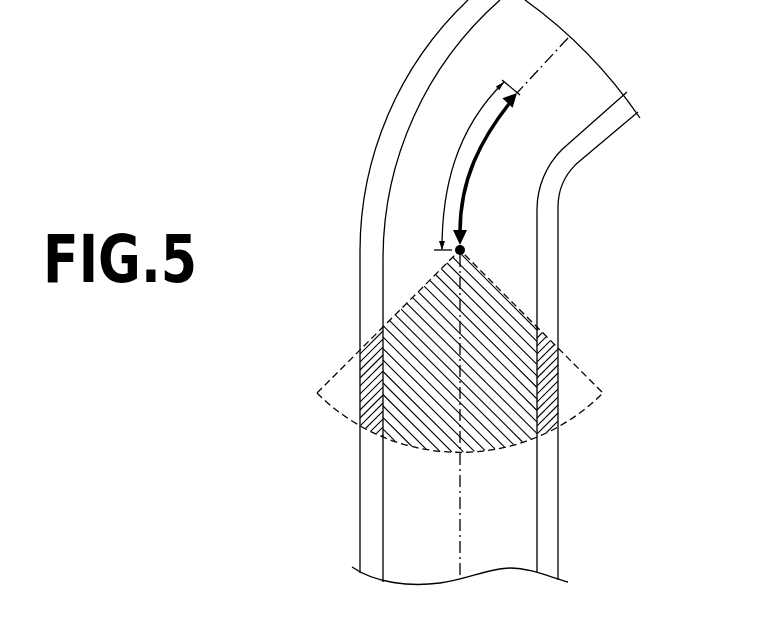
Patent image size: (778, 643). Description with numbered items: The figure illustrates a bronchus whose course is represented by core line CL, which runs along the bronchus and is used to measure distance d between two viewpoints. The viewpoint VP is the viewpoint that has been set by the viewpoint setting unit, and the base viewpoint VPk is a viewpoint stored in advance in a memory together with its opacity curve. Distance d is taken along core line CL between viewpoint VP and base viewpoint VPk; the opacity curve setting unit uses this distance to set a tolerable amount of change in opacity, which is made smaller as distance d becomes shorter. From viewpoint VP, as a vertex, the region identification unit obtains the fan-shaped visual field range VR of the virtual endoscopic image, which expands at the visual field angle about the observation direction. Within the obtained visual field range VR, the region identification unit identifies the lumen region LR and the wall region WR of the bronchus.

The core line CL is at (548, 58).
The base viewpoint VPk is at (533, 97).
The viewpoint VP is at (477, 240).
The distance d is at (475, 166).
The visual field range VR is at (335, 372).
The lumen region LR is at (516, 314).
The wall region WR is at (378, 443).